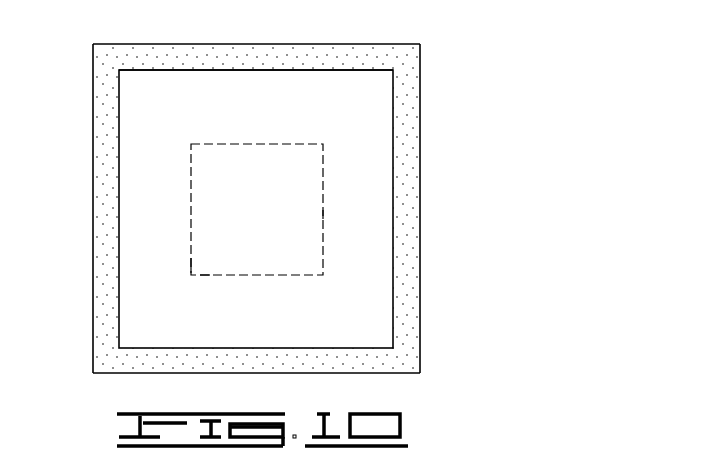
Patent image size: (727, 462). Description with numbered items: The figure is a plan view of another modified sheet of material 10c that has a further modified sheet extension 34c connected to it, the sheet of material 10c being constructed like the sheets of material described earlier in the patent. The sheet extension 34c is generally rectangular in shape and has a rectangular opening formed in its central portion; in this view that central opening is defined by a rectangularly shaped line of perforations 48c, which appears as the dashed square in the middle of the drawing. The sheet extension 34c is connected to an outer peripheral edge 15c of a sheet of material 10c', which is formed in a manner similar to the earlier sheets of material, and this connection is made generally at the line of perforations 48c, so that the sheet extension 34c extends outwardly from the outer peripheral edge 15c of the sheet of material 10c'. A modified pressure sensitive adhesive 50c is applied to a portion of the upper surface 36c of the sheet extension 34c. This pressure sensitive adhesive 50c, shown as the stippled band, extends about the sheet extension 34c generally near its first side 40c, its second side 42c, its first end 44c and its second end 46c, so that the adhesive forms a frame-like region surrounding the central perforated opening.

The sheet of material 10c is at (311, 206).
The sheet of material 10c' is at (240, 185).
The outer peripheral edge 15c is at (191, 265).
The sheet extension 34c is at (219, 80).
The upper surface 36c is at (373, 146).
The first side 40c is at (93, 126).
The second side 42c is at (421, 163).
The first end 44c is at (368, 50).
The second end 46c is at (397, 374).
The line of perforations 48c is at (325, 219).
The pressure sensitive adhesive 50c is at (262, 55).